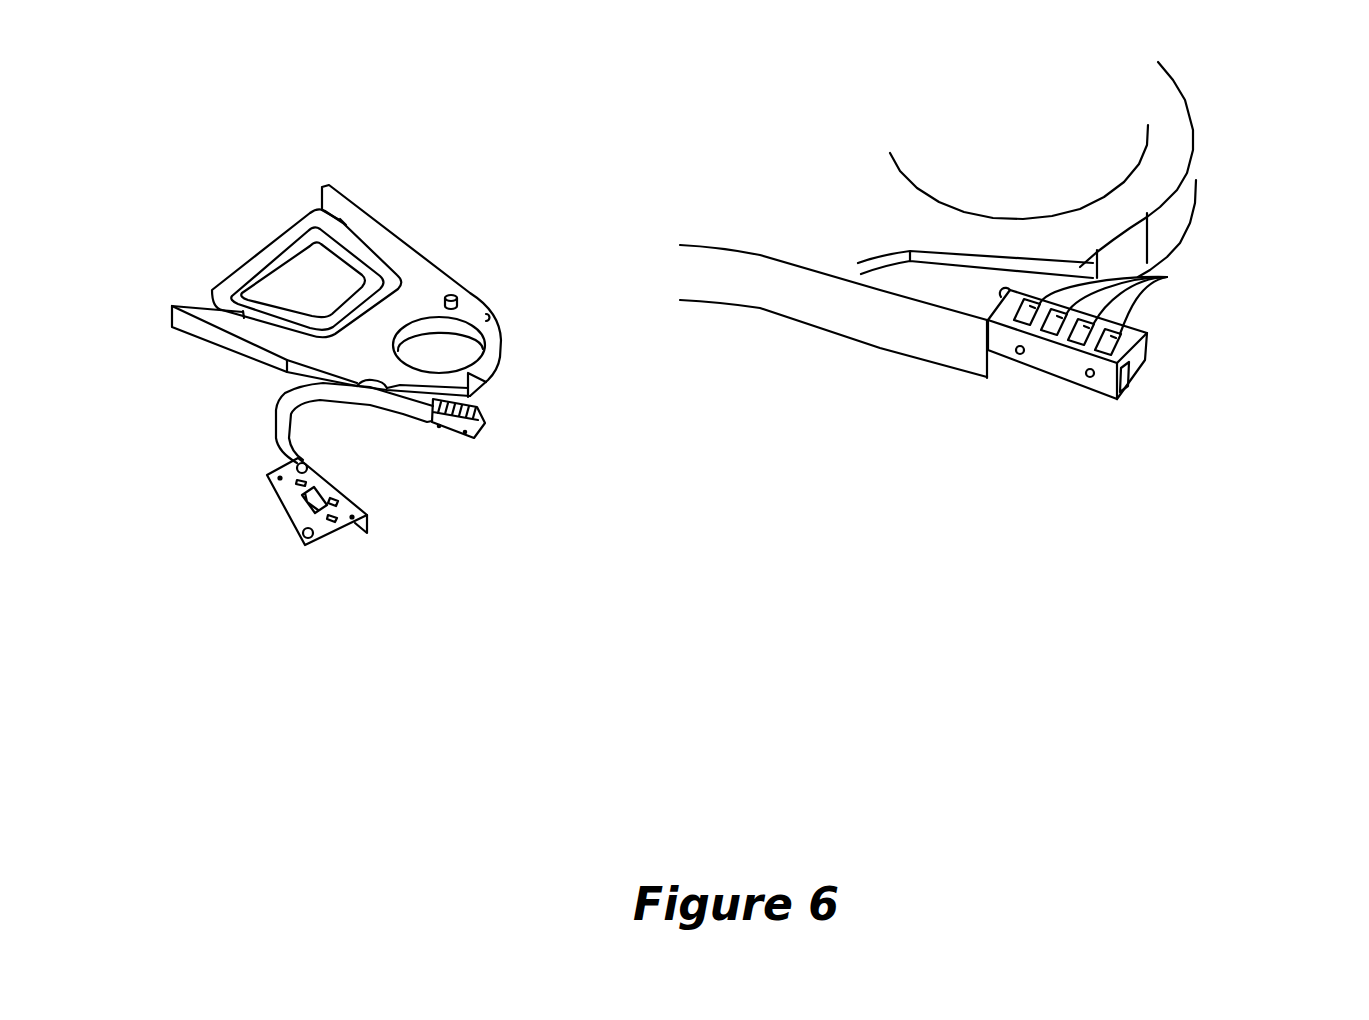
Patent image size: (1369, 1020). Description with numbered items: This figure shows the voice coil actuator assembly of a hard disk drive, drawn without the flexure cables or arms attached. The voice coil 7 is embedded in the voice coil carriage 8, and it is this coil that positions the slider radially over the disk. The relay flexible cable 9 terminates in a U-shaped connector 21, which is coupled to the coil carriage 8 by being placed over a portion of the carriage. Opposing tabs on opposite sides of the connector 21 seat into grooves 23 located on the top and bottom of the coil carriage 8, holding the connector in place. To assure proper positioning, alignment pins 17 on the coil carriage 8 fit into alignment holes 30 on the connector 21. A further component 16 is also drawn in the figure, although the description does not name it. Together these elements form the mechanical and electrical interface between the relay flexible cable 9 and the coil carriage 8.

The voice coil 7 is at (237, 271).
The voice coil carriage 8 is at (433, 287).
The relay flexible cable 9 is at (277, 438).
The wires 16 is at (1165, 276).
The alignment pins 17 is at (1087, 377).
The U-shaped connector 21 is at (1128, 386).
The grooves 23 is at (1146, 339).
The alignment holes 30 is at (1147, 337).